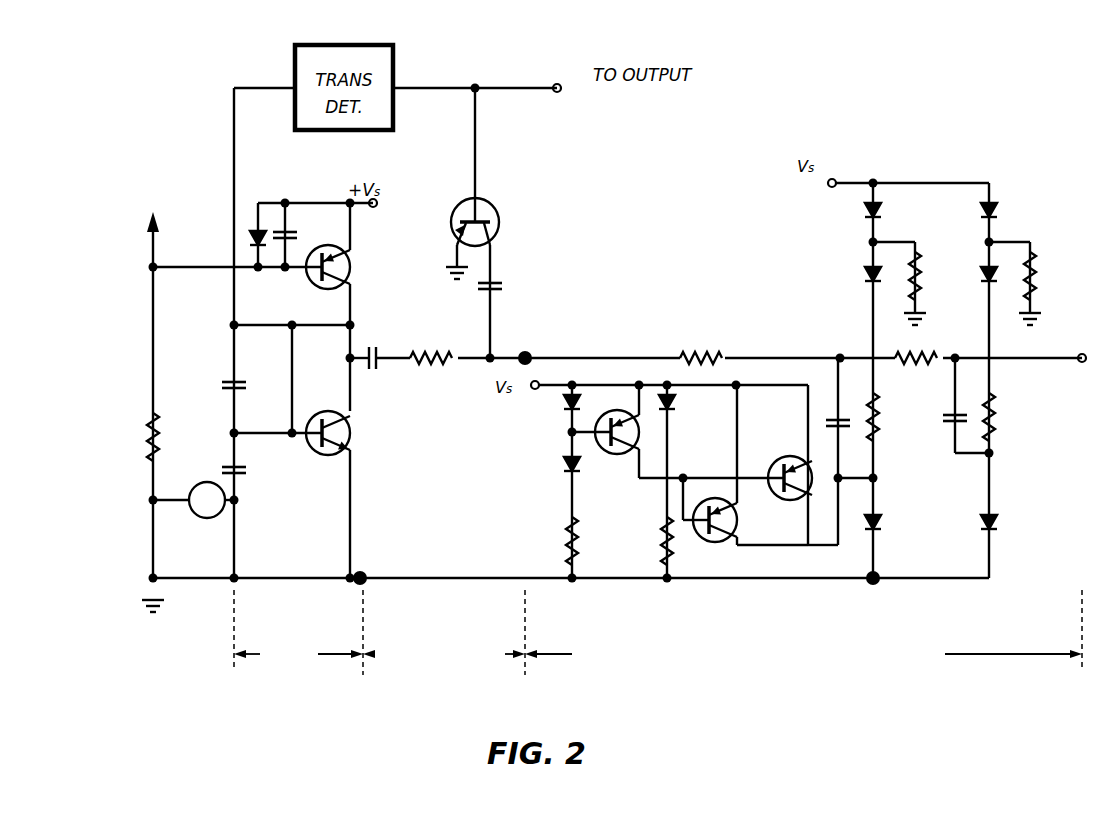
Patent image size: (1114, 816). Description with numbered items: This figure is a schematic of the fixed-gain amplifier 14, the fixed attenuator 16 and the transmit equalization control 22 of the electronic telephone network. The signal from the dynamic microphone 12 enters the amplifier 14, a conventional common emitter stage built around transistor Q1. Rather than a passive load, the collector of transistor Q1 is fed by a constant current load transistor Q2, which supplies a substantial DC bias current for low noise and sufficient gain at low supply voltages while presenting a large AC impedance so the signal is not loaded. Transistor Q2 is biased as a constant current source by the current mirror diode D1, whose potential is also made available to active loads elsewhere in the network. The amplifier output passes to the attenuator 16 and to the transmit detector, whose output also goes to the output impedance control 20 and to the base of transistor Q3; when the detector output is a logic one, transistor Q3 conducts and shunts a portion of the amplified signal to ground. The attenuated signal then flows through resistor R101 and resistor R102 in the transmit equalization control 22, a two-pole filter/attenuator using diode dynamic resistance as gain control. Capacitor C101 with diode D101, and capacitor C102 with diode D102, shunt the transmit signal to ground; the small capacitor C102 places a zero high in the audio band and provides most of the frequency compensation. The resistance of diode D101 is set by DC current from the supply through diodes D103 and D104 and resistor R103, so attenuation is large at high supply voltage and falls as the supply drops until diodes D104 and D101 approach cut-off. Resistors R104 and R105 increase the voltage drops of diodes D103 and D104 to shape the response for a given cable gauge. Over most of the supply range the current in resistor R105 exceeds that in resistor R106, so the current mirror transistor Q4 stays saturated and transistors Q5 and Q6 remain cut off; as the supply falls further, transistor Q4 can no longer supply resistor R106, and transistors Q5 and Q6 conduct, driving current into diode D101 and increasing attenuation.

The dynamic microphone 12 is at (202, 518).
The fixed-gain amplifier 14 is at (298, 632).
The fixed attenuator 16 is at (444, 632).
The output impedance control 20 is at (675, 102).
The transmit signal equalizer 22 is at (803, 630).
The current mirror diode D1 is at (250, 240).
The transistor Q1 is at (350, 441).
The constant current load transistor Q2 is at (352, 278).
The transistor Q3 is at (497, 227).
The current mirror transistor Q4 is at (623, 456).
The transistor Q5 is at (738, 520).
The transistor Q6 is at (787, 458).
The resistor R101 is at (728, 355).
The resistor R102 is at (938, 340).
The resistor R103 is at (879, 420).
The resistor R104 is at (924, 282).
The resistor R105 is at (566, 544).
The resistor R106 is at (661, 545).
The capacitor C101 is at (834, 408).
The capacitor C102 is at (948, 420).
The diode D101 is at (884, 526).
The diode D102 is at (1004, 526).
The diode D103 is at (862, 209).
The diode D104 is at (864, 274).